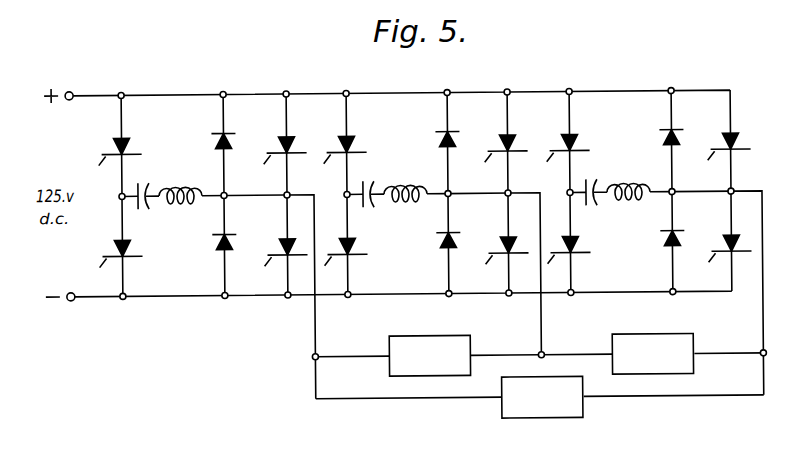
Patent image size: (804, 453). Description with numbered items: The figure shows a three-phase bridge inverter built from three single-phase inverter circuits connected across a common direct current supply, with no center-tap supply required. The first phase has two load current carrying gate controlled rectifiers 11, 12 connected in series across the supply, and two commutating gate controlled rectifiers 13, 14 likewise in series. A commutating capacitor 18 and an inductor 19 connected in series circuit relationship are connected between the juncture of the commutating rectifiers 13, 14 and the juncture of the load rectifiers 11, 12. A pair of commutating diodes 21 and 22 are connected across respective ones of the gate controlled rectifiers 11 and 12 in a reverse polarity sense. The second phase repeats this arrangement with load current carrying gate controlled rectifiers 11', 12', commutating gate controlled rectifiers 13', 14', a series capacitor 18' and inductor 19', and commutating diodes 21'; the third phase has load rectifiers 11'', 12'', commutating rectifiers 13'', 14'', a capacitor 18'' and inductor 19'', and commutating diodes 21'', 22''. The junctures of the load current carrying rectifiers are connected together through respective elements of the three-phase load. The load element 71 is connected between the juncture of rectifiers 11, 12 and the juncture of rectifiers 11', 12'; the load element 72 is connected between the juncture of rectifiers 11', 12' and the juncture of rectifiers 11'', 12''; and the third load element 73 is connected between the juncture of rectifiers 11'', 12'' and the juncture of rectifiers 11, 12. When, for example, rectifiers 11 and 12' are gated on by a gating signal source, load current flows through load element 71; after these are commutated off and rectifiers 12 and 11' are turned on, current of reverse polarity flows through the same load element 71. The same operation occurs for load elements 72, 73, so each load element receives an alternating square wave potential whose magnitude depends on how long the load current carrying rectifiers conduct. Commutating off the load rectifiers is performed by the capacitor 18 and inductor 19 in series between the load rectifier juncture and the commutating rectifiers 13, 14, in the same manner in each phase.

The load current carrying gate controlled rectifier 11 is at (280, 146).
The load current carrying gate controlled rectifier 12 is at (279, 250).
The commutating gate controlled rectifier 13 is at (129, 143).
The commutating gate controlled rectifier 14 is at (129, 250).
The capacitor 18 is at (157, 206).
The inductor 19 is at (180, 182).
The commutating diode 21 is at (215, 128).
The commutating diode 22 is at (213, 248).
The load current carrying gate controlled rectifier 11' is at (503, 138).
The load current carrying gate controlled rectifier 12' is at (504, 245).
The commutating gate controlled rectifier 13' is at (356, 143).
The commutating gate controlled rectifier 14' is at (359, 248).
The capacitor 18' is at (386, 180).
The inductor 19' is at (409, 181).
The commutating diode 21' is at (436, 179).
The load current carrying gate controlled rectifier 11'' is at (741, 137).
The load current carrying gate controlled rectifier 12'' is at (735, 237).
The commutating gate controlled rectifier 13'' is at (580, 139).
The commutating gate controlled rectifier 14'' is at (586, 249).
The capacitor 18'' is at (610, 176).
The inductor 19'' is at (631, 178).
The commutating diode 21'' is at (661, 124).
The commutating diode 22'' is at (663, 251).
The load element 71 is at (425, 318).
The load element 72 is at (656, 335).
The load element 73 is at (538, 419).